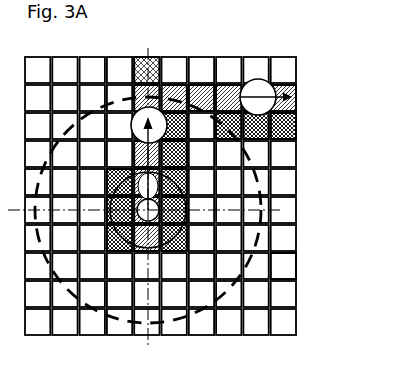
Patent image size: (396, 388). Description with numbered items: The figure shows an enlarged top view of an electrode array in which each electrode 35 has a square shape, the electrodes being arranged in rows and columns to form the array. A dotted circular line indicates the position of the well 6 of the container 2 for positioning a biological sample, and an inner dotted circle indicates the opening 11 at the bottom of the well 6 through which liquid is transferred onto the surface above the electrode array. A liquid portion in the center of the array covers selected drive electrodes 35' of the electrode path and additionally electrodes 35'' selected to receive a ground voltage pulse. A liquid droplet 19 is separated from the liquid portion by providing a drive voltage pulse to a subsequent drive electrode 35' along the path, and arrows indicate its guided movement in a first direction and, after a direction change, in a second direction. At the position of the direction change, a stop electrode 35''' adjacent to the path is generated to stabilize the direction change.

The container 2 is at (303, 47).
The well 6 is at (186, 318).
The opening 11 is at (190, 257).
The liquid droplet 19 is at (192, 83).
The electrode 35 is at (312, 284).
The drive electrode 35' is at (245, 126).
The ground electrode 35'' is at (260, 140).
The stop electrode 35''' is at (161, 58).